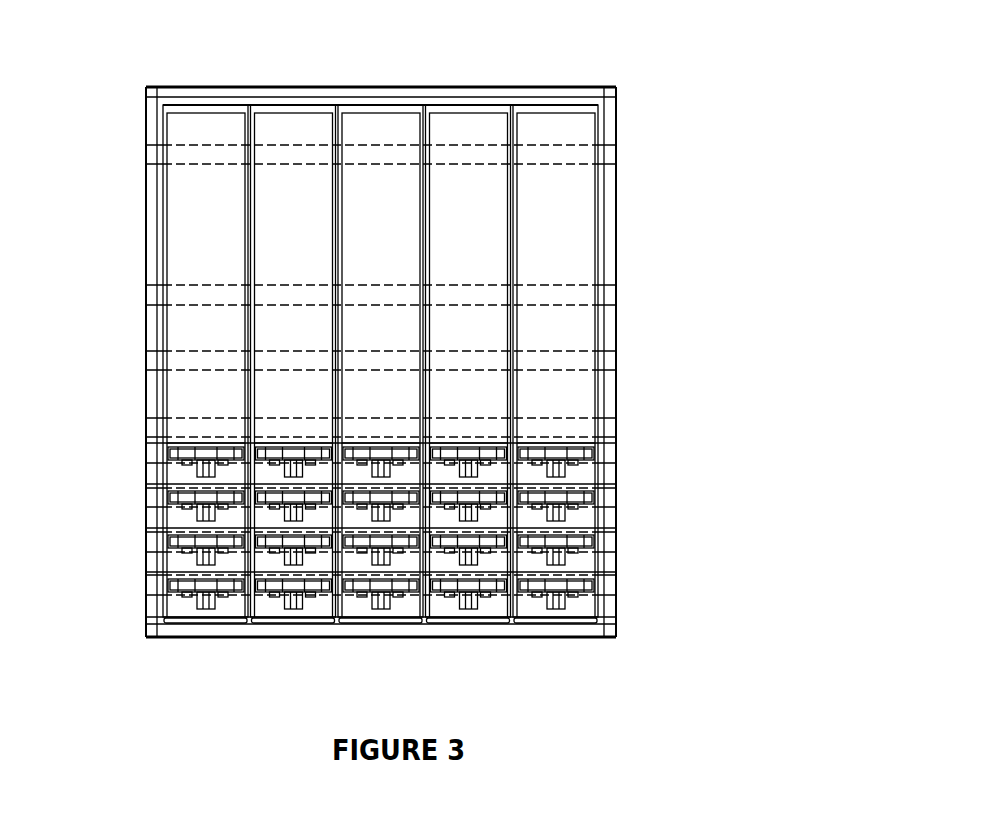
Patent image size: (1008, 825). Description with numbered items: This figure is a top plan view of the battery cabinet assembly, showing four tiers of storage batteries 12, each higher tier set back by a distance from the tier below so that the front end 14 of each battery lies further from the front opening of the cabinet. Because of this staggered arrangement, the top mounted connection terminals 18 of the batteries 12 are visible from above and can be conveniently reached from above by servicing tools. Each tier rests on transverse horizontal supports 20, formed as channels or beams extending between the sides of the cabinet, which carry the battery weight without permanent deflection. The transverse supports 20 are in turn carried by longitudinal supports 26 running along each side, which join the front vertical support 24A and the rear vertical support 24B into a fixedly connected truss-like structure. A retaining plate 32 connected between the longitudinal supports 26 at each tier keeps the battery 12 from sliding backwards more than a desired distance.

The storage battery 12 is at (560, 125).
The front end of battery 14 is at (562, 625).
The connection terminal 18 is at (405, 550).
The transverse horizontal support 20 is at (611, 152).
The front vertical support 24A is at (148, 632).
The rear vertical support 24B is at (619, 93).
The longitudinal support 26 is at (147, 218).
The retaining plate 32 is at (384, 87).